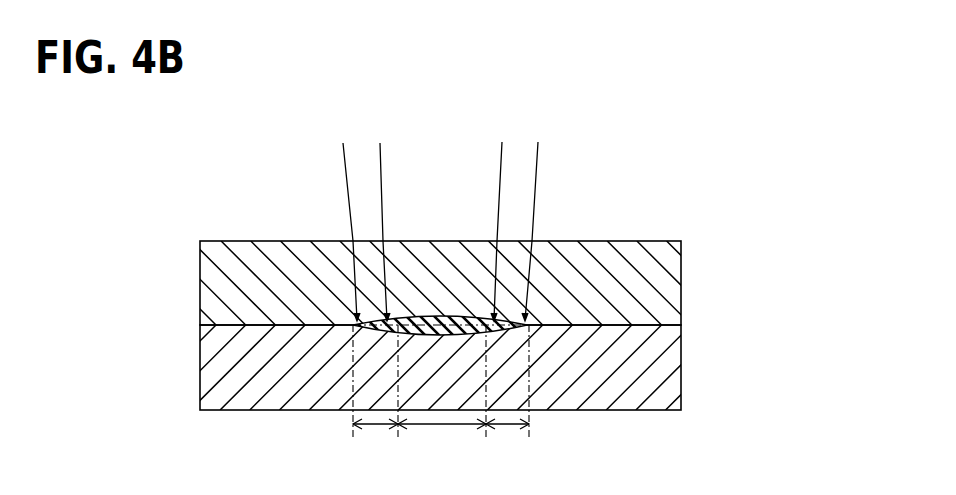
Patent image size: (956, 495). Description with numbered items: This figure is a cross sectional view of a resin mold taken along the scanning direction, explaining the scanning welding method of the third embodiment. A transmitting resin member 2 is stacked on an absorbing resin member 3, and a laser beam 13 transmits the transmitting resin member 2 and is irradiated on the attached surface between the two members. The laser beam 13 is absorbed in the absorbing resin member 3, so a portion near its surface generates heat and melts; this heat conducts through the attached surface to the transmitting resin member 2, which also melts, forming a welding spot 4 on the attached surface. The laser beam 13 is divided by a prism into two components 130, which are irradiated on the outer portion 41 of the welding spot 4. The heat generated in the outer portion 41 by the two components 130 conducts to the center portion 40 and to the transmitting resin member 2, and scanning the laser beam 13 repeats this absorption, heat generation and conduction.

The transmitting resin member 2 is at (200, 285).
The absorbing resin member 3 is at (200, 370).
The welding spot 4 is at (520, 316).
The laser beam 13 is at (311, 164).
The components 130 is at (353, 236).
The center portion 40 is at (442, 445).
The outer portion 41 is at (441, 398).